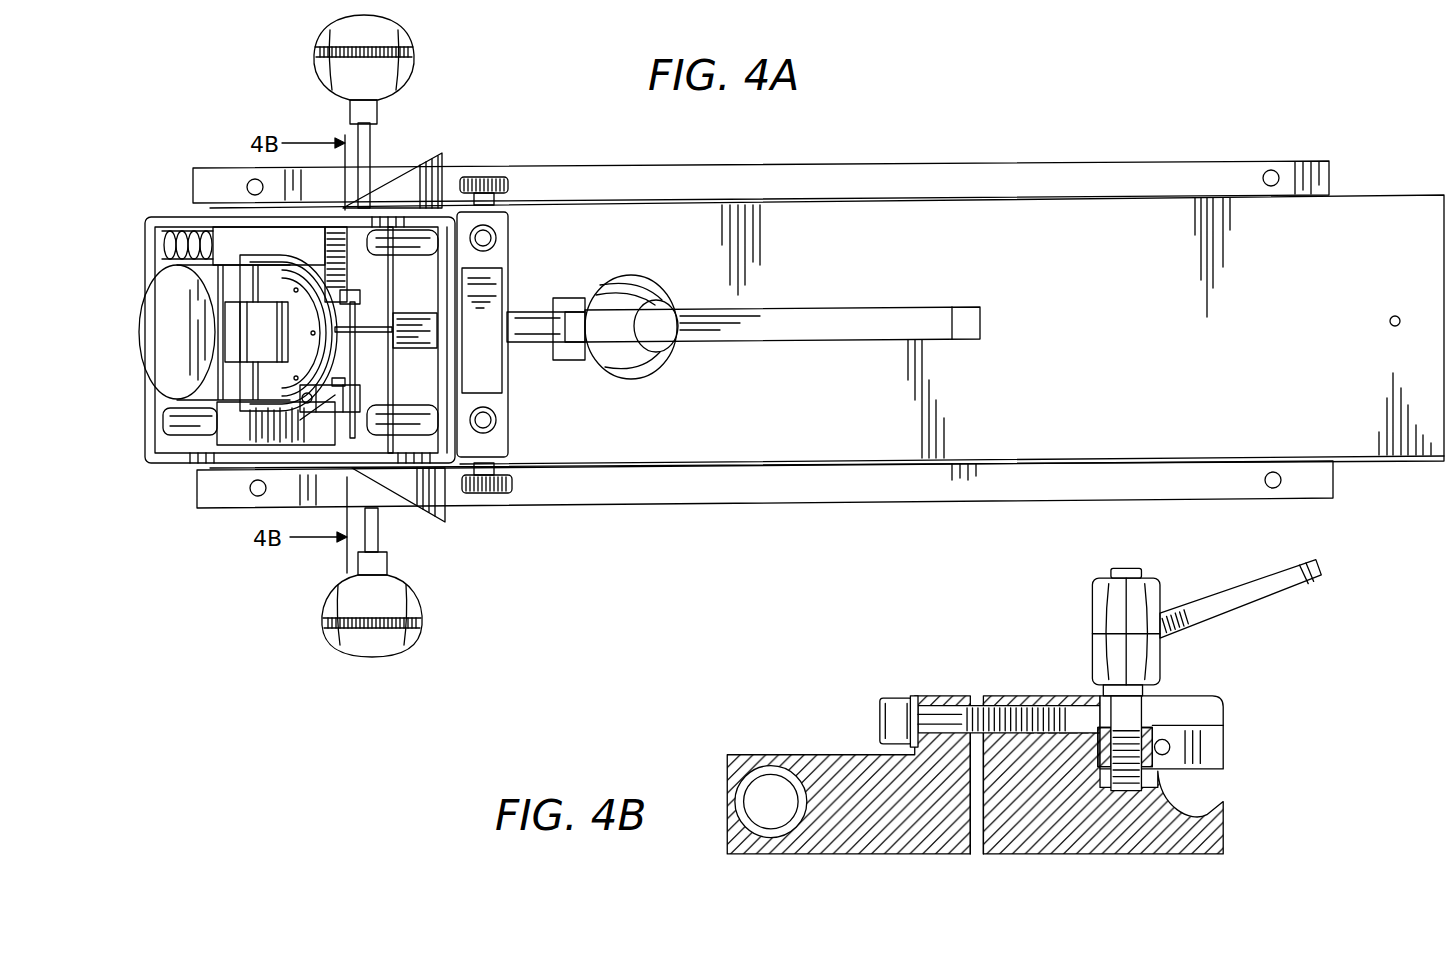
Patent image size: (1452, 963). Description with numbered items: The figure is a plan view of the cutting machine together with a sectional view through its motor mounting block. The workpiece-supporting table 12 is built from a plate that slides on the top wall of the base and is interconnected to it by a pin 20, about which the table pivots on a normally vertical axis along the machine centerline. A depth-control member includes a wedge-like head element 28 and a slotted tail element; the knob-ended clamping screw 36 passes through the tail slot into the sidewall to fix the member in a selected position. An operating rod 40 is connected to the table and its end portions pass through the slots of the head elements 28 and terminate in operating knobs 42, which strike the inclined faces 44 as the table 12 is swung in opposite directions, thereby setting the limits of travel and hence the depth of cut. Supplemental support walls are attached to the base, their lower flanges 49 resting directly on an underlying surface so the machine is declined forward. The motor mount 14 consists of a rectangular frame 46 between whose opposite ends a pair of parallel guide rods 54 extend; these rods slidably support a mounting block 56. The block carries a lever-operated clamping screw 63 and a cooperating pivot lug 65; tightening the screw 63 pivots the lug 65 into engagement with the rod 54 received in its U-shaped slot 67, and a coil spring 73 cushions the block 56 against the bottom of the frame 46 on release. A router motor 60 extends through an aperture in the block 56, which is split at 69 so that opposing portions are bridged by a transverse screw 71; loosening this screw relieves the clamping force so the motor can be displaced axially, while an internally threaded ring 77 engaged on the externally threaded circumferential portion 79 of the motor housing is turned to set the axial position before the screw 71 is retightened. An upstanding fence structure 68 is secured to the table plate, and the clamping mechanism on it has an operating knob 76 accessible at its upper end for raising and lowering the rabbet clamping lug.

In FIG. 4A, the workpiece-supporting table 12 is at (1097, 303).
In FIG. 4A, the motor mount 14 is at (510, 270).
In FIG. 4A, the pin 20 is at (1392, 317).
In FIG. 4A, the wedge-like head element 28 is at (392, 192).
In FIG. 4A, the knob-ended clamping screw 36 is at (503, 200).
In FIG. 4A, the operating rod 40 is at (371, 140).
In FIG. 4A, the operating knob 42 is at (402, 38).
In FIG. 4A, the inclined face 44 is at (432, 168).
In FIG. 4A, the rectangular frame 46 is at (165, 456).
In FIG. 4A, the lower flange 49 is at (935, 178).
In FIG. 4A, the guide rod 54 is at (492, 240).
In FIG. 4A, the mounting block 56 is at (232, 242).
In FIG. 4A, the router motor 60 is at (160, 348).
In FIG. 4A, the lever-operated clamping screw 63 is at (328, 422).
In FIG. 4B, the lever-operated clamping screw 63 is at (1203, 578).
In FIG. 4A, the pivot lug 65 is at (340, 425).
In FIG. 4B, the pivot lug 65 is at (1167, 725).
In FIG. 4B, the U-shaped slot 67 is at (1177, 788).
In FIG. 4A, the fence structure 68 is at (855, 342).
In FIG. 4A, the split 69 is at (372, 337).
In FIG. 4B, the split 69 is at (953, 828).
In FIG. 4A, the transverse screw 71 is at (346, 290).
In FIG. 4B, the transverse screw 71 is at (927, 700).
In FIG. 4A, the coil spring 73 is at (182, 232).
In FIG. 4A, the operating knob 76 is at (655, 365).
In FIG. 4A, the ring 77 is at (325, 410).
In FIG. 4A, the externally threaded circumferential portion 79 is at (275, 258).